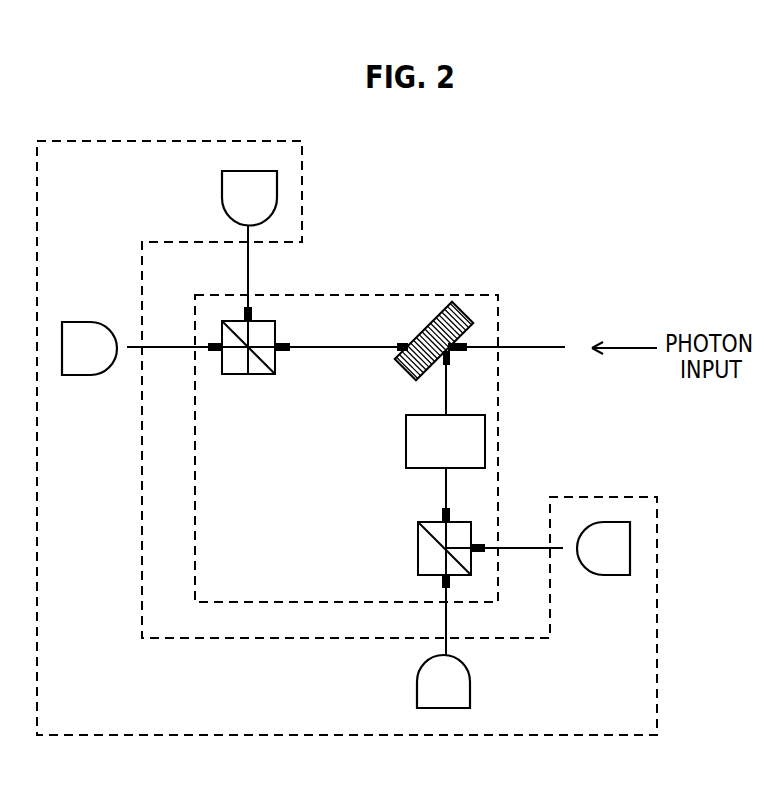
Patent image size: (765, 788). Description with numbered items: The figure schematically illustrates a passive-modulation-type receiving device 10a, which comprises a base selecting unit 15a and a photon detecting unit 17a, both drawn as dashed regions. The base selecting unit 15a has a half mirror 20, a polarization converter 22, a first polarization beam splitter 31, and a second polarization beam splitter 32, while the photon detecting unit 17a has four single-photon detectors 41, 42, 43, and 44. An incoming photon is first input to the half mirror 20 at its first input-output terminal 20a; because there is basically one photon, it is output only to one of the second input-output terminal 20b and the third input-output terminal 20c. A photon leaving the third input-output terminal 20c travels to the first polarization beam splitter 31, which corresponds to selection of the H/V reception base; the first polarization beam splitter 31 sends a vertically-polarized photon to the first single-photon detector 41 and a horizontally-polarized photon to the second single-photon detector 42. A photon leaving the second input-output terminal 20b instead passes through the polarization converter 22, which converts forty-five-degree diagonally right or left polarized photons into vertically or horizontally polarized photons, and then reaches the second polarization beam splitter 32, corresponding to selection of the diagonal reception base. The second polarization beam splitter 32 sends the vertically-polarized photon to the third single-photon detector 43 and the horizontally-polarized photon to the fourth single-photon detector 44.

The receiving device 10a is at (570, 175).
The base selecting unit 15a is at (343, 294).
The photon detecting unit 17a is at (92, 140).
The half mirror 20 is at (463, 305).
The first input-output terminal 20a is at (457, 353).
The second input-output terminal 20b is at (452, 360).
The third input-output terminal 20c is at (404, 343).
The polarization converter 22 is at (485, 440).
The first polarization beam splitter 31 is at (259, 321).
The second polarization beam splitter 32 is at (472, 566).
The first single-photon detector 41 is at (90, 376).
The second single-photon detector 42 is at (251, 170).
The third single-photon detector 43 is at (470, 688).
The fourth single-photon detector 44 is at (610, 521).